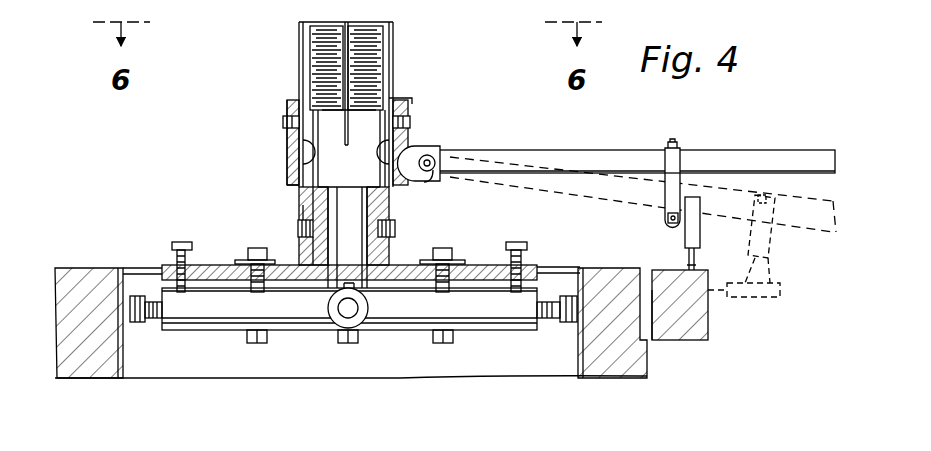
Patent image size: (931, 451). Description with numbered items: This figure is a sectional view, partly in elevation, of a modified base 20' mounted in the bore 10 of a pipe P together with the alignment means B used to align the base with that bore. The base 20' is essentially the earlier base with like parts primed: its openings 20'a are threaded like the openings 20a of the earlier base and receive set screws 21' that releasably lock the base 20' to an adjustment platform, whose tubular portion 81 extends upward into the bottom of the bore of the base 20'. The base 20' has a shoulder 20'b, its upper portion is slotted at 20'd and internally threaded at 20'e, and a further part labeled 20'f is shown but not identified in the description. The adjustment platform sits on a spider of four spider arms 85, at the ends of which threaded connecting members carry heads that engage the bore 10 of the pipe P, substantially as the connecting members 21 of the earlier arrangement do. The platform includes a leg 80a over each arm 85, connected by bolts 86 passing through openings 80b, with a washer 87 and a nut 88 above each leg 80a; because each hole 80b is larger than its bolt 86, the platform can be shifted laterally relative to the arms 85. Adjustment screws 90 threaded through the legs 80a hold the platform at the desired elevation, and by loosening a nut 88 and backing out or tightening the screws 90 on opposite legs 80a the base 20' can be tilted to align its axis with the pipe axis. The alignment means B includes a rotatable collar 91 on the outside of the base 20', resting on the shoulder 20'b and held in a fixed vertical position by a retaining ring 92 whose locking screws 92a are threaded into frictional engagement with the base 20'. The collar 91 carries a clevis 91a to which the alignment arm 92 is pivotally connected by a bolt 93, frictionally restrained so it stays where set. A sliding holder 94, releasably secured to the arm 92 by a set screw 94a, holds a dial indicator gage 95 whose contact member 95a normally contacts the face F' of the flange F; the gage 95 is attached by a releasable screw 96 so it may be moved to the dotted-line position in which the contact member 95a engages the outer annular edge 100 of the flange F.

The bore 10 is at (130, 356).
The modified base 20' is at (367, 117).
The openings 20'a is at (399, 226).
The shoulder 20'b is at (257, 142).
The slot 20'd is at (412, 68).
The internal threads 20'e is at (386, 62).
The center pin 20'f is at (346, 94).
The openings 20a is at (300, 205).
The connecting members 21 is at (275, 213).
The set screws 21' is at (375, 229).
The leg 80a is at (205, 265).
The openings 80b is at (236, 290).
The tubular portion 81 is at (363, 201).
The spider arms 85 is at (195, 326).
The bolts 86 is at (250, 341).
The washer 87 is at (242, 290).
The nut 88 is at (258, 260).
The adjustment screws 90 is at (178, 242).
The rotatable collar 91 is at (418, 139).
The clevis 91a is at (422, 151).
The alignment arm 92 is at (402, 100).
The locking screws 92a is at (286, 121).
The bolt 93 is at (428, 179).
The sliding holder 94 is at (680, 153).
The set screw 94a is at (672, 140).
The dial indicator gage 95 is at (685, 238).
The contact member 95a is at (688, 263).
The releasable screw 96 is at (668, 219).
The outer annular edge 100 is at (712, 330).
The alignment means B is at (643, 143).
The flange F is at (675, 329).
The face F' is at (721, 258).
The pipe P is at (642, 376).